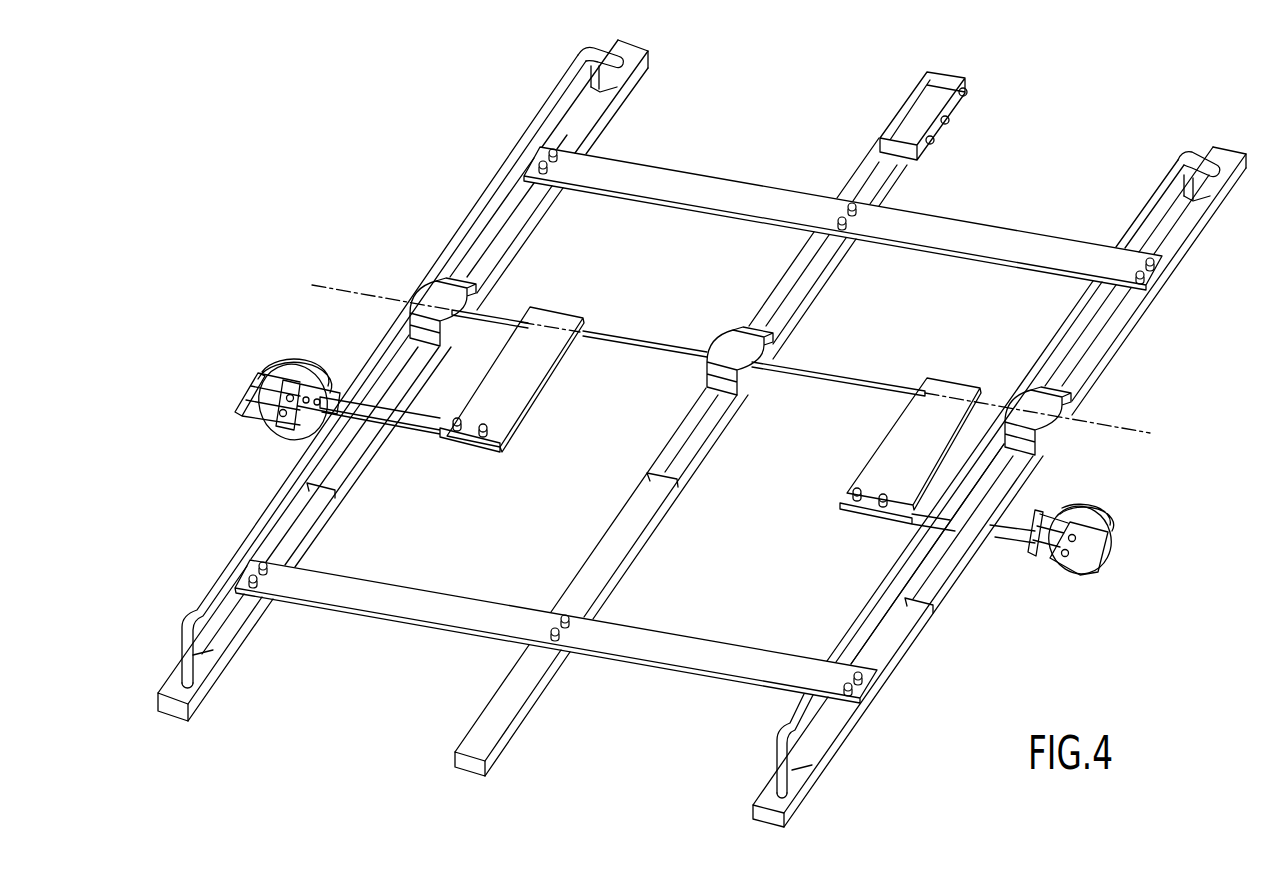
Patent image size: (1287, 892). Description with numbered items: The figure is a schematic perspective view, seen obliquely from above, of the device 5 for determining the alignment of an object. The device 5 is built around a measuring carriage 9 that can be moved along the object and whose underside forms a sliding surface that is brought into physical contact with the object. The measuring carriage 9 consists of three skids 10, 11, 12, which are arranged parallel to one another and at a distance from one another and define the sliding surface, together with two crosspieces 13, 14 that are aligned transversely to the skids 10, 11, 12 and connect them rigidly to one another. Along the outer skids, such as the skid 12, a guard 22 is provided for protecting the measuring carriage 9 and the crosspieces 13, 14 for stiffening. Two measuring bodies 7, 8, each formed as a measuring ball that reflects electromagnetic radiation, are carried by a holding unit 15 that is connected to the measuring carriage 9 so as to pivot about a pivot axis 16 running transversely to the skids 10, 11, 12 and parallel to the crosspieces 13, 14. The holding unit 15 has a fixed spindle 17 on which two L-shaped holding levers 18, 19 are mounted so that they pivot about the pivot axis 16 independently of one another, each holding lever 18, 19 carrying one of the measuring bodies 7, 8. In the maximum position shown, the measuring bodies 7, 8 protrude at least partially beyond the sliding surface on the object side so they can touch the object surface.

The device 5 is at (380, 210).
The measuring body 7 is at (1057, 570).
The measuring body 8 is at (262, 417).
The measuring carriage 9 is at (1132, 344).
The skid 10 is at (842, 733).
The skid 11 is at (537, 688).
The skid 12 is at (230, 647).
The crosspiece 13 is at (980, 233).
The crosspiece 14 is at (713, 663).
The holding unit 15 is at (528, 404).
The pivot axis 16 is at (362, 297).
The spindle 17 is at (610, 332).
The holding lever 18 is at (913, 432).
The holding lever 19 is at (532, 347).
The guard 22 is at (475, 218).